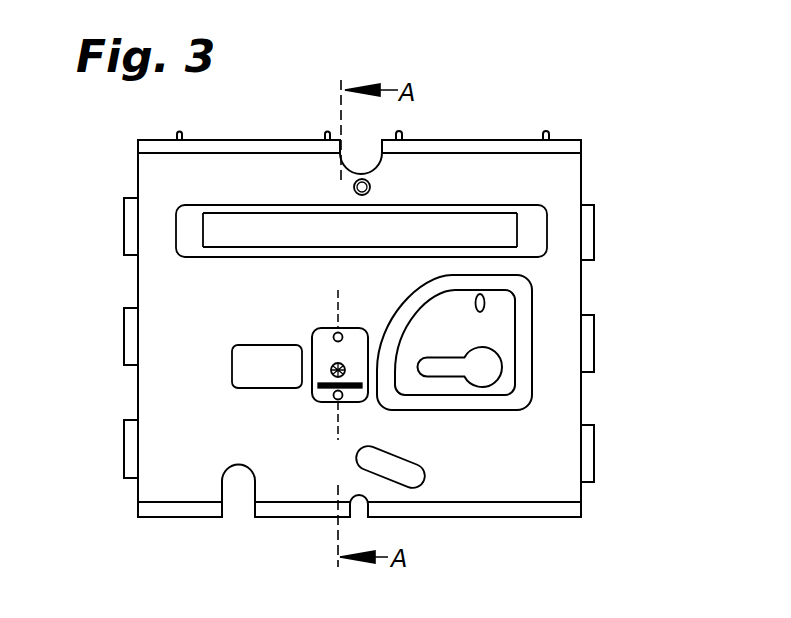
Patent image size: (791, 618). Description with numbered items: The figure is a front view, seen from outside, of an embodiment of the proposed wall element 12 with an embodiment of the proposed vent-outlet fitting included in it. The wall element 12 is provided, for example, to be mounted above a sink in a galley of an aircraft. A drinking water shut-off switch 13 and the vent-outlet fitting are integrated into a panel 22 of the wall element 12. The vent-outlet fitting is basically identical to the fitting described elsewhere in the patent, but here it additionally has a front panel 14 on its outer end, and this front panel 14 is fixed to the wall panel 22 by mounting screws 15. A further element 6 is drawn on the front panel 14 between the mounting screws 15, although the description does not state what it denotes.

The wall element 12 is at (623, 161).
The drinking water shut-off switch 13 is at (490, 363).
The front panel 14 is at (357, 393).
The mounting screws 15 is at (337, 333).
The adjusting screw 6 is at (333, 366).
The panel 22 is at (553, 488).